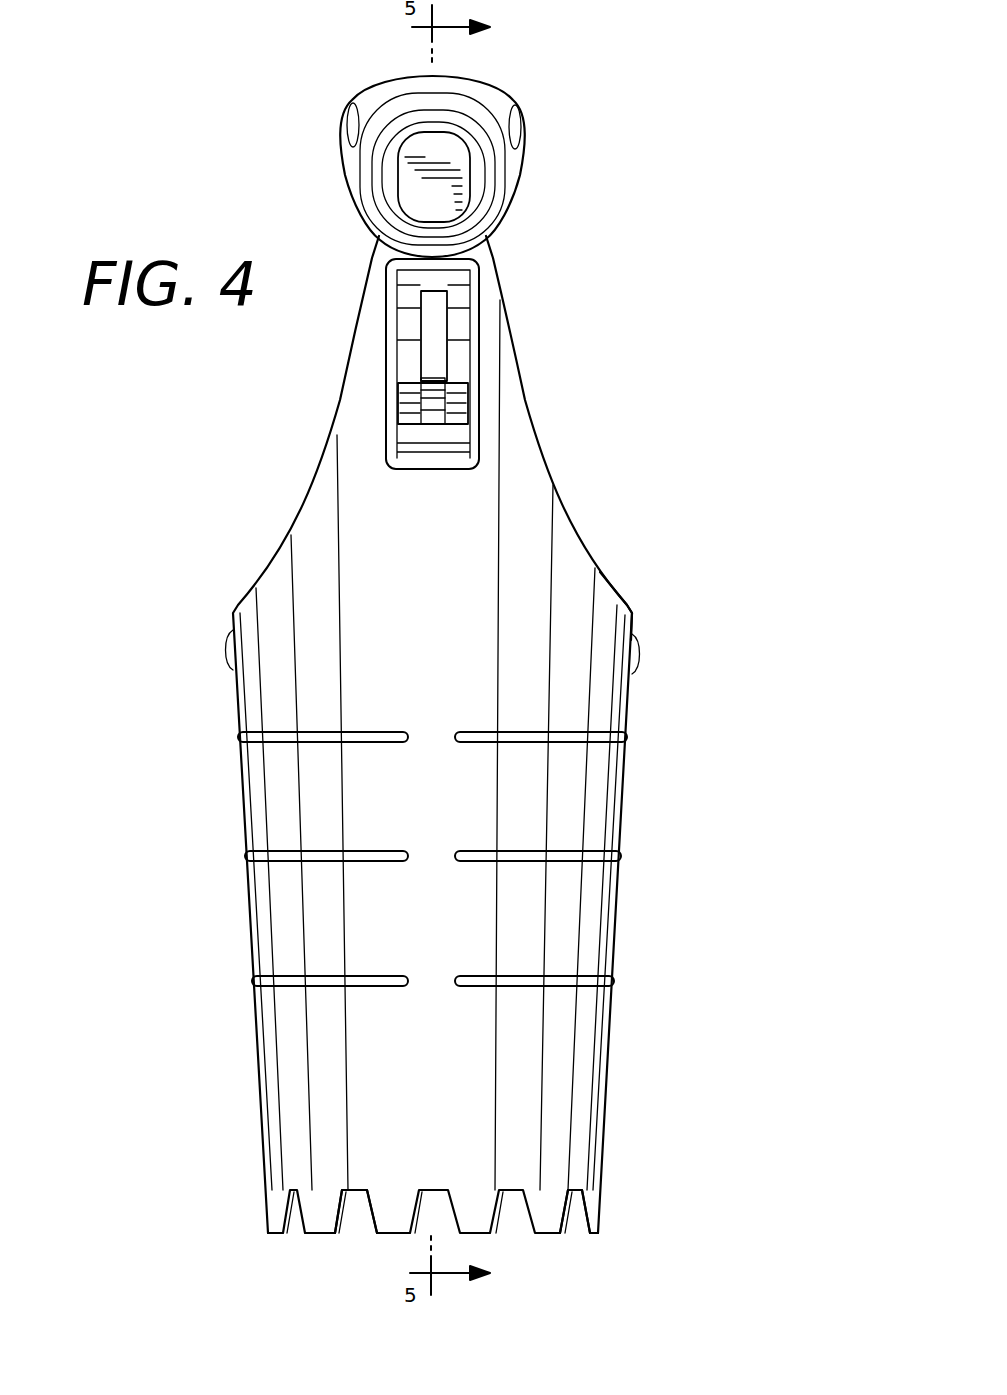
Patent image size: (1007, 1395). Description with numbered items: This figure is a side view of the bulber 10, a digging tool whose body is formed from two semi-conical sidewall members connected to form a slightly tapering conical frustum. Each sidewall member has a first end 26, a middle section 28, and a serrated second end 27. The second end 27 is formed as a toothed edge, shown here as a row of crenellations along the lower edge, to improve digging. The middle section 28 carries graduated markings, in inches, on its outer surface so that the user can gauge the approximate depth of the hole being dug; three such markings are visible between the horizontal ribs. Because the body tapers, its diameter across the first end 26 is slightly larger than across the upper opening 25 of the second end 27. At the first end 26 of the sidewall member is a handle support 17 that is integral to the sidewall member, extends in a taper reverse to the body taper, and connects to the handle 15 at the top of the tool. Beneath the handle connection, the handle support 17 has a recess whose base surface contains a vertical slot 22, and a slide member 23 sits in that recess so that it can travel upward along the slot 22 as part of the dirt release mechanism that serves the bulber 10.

The bulber 10 is at (634, 326).
The handle 15 is at (512, 178).
The handle support 17 is at (447, 526).
The vertical slot 22 is at (437, 348).
The slide member 23 is at (408, 403).
The upper opening 25 is at (358, 1210).
The first end 26 is at (630, 608).
The second end 27 is at (598, 1205).
The middle section 28 is at (568, 932).